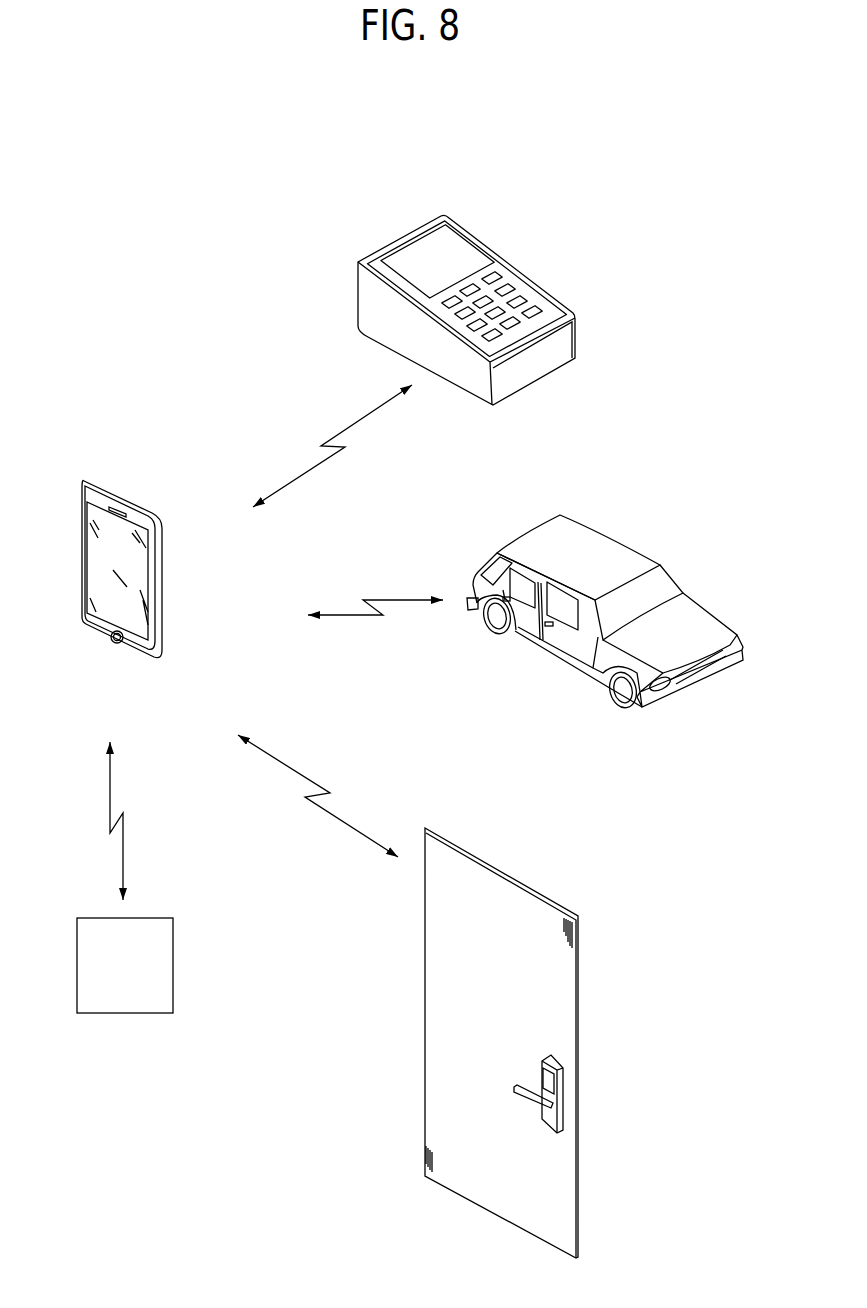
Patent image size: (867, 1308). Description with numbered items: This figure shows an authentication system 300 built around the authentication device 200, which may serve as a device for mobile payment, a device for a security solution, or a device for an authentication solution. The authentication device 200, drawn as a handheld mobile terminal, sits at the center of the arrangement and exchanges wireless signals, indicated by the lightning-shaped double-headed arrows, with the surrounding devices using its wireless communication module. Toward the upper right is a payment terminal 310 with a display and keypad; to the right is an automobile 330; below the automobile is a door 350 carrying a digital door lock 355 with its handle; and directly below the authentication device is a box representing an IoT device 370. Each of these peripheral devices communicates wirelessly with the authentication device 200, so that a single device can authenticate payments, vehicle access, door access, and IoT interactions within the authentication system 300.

The authentication device 200 is at (124, 500).
The authentication system 300 is at (142, 157).
The payment terminal 310 is at (510, 263).
The automobile 330 is at (615, 537).
The door 350 is at (562, 1002).
The digital door lock 355 is at (560, 1094).
The IoT device 370 is at (123, 1017).